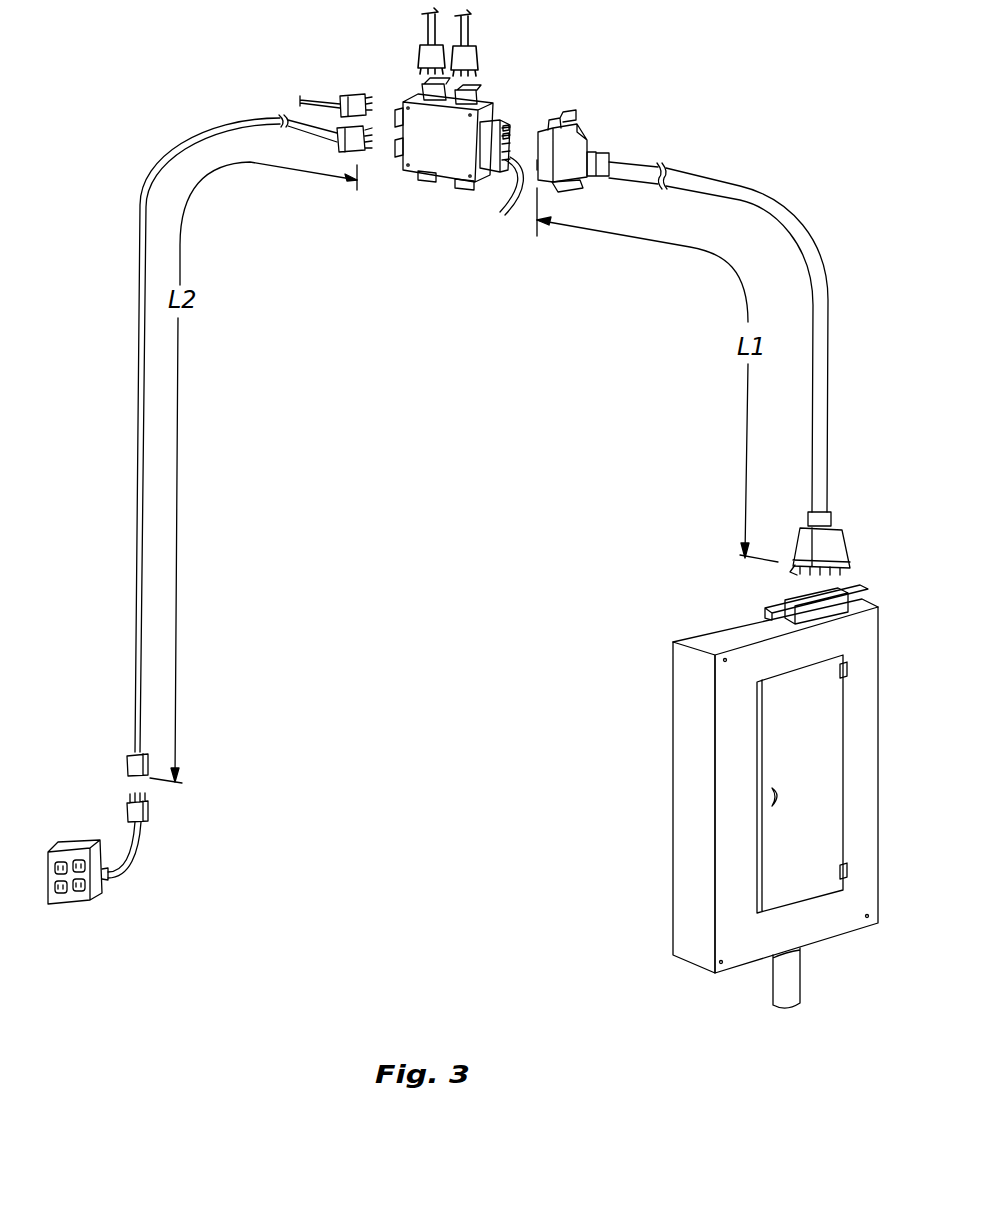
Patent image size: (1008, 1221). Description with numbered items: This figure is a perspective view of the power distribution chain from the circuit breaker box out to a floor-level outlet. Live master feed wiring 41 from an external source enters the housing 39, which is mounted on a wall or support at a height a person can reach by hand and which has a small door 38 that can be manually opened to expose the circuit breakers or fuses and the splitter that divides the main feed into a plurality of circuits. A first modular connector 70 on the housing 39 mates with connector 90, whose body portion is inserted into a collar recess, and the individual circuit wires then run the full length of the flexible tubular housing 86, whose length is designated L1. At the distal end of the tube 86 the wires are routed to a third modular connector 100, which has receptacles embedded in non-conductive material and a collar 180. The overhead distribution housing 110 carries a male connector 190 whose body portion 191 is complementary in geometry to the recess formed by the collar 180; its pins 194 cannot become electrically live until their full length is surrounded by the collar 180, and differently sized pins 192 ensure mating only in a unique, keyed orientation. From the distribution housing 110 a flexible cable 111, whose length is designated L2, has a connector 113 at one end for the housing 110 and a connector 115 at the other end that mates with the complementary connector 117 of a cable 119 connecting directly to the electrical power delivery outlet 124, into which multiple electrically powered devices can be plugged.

The door 38 is at (757, 753).
The housing 39 is at (697, 795).
The wiring 41 is at (773, 998).
The first modular connector 70 is at (838, 590).
The flexible tubular housing 86 is at (828, 365).
The connector 90 is at (846, 532).
The third modular connector 100 is at (586, 136).
The distribution housing 110 is at (408, 175).
The flexible cable 111 is at (140, 330).
The connector 113 is at (337, 142).
The connector 115 is at (127, 766).
The connector 117 is at (148, 816).
The cable 119 is at (129, 872).
The electrical power delivery outlet 124 is at (76, 902).
The collar 180 is at (545, 170).
The male connector 190 is at (508, 118).
The body portion 191 is at (490, 152).
The pins 192 is at (514, 131).
The pins 194 is at (497, 198).